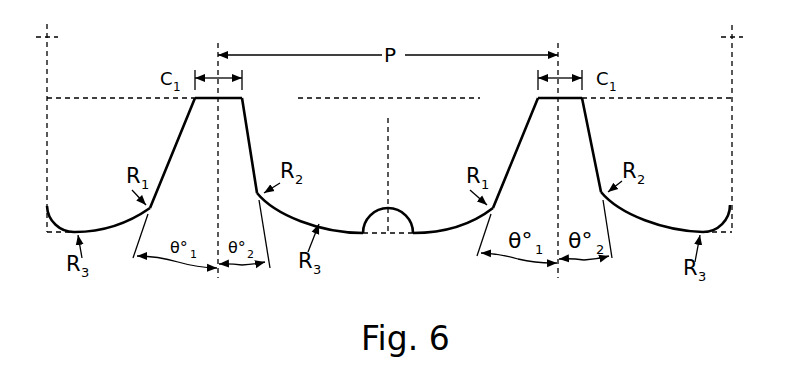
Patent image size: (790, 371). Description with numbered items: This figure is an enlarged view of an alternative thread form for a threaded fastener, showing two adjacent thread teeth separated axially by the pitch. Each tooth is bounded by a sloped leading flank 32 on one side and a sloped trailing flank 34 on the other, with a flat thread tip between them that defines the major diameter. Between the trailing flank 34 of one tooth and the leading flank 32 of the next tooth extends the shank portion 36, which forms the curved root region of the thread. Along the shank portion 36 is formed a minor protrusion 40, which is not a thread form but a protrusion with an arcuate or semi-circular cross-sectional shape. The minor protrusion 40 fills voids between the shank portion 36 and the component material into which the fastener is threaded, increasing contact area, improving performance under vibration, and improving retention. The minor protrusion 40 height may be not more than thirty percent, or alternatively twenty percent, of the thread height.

The leading flank 32 is at (177, 148).
The trailing flank 34 is at (250, 148).
The shank portion 36 is at (432, 233).
The minor protrusion 40 is at (398, 204).